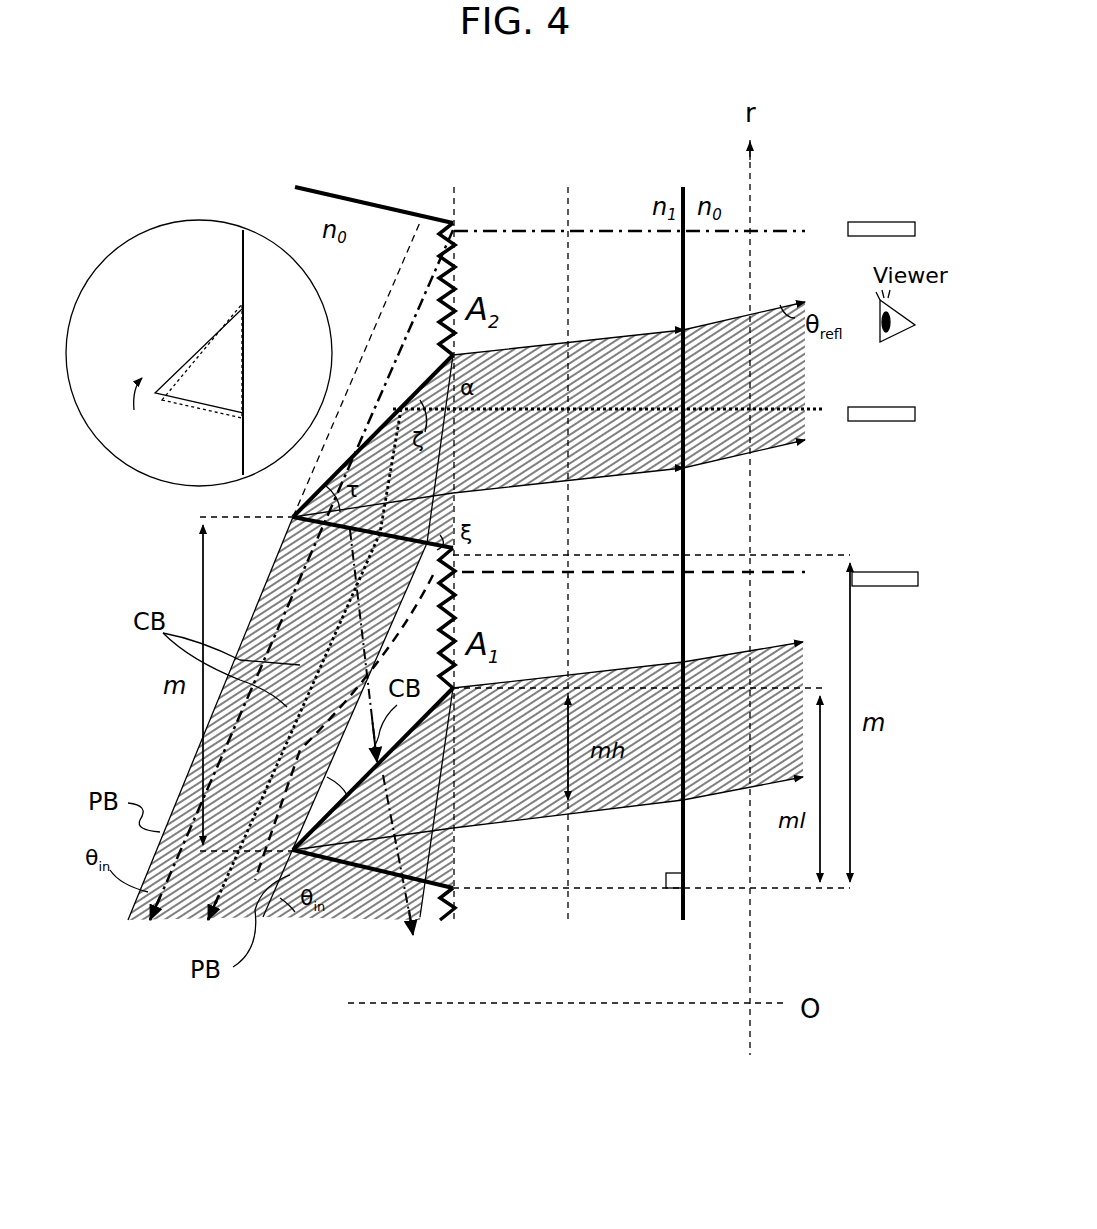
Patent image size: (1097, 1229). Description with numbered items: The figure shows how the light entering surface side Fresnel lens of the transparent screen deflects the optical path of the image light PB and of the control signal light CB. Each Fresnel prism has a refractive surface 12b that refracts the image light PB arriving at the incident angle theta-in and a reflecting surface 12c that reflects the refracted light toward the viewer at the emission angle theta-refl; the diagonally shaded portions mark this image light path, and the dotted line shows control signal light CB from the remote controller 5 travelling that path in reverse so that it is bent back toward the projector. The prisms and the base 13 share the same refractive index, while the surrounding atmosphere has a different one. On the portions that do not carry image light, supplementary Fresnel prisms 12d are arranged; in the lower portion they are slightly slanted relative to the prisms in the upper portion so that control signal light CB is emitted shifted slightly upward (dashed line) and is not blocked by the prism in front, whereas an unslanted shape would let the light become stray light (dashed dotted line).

The remote controller 5 is at (892, 224).
The refractive surface 12b is at (345, 546).
The reflecting surface 12c is at (371, 436).
The Fresnel prism 12d is at (462, 598).
The base 13 is at (606, 198).